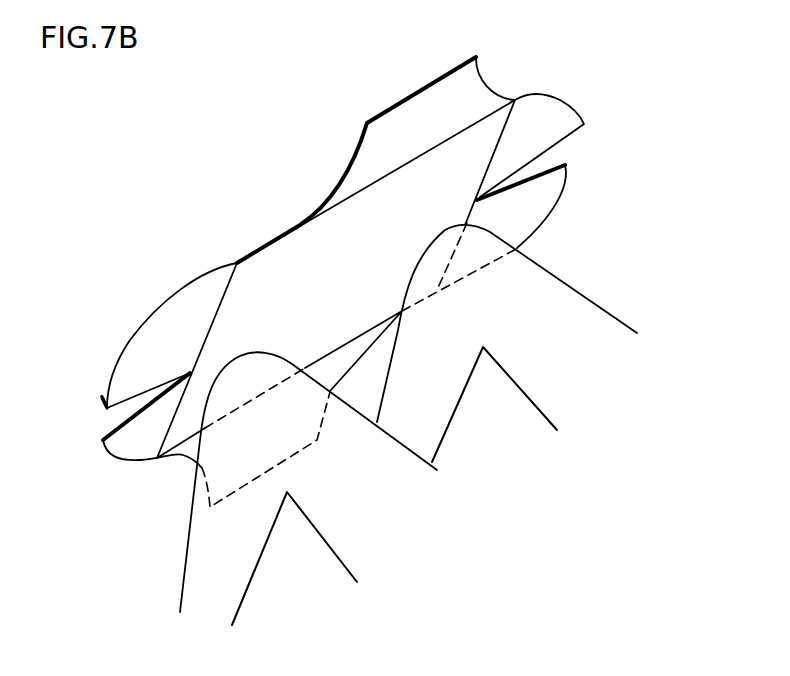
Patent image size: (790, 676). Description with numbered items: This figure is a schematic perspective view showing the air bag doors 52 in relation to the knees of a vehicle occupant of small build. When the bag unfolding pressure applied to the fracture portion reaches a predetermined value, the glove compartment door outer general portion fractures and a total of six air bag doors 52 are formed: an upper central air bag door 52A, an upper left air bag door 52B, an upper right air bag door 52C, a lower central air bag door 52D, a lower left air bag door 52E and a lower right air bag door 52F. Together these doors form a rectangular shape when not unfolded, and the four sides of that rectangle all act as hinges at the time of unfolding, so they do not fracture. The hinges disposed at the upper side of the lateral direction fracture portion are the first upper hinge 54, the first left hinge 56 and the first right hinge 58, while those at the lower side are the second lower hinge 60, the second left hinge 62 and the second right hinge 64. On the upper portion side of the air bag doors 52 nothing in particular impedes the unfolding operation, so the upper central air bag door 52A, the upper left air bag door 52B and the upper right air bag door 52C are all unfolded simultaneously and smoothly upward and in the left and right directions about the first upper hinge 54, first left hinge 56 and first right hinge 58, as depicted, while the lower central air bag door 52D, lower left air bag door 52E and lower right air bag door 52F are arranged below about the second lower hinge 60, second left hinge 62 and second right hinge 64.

The air bag doors 52 is at (593, 152).
The upper central air bag door 52A is at (393, 120).
The upper left air bag door 52B is at (158, 327).
The upper right air bag door 52C is at (560, 110).
The lower central air bag door 52D is at (248, 458).
The lower left air bag door 52E is at (143, 452).
The lower right air bag door 52F is at (535, 222).
The first upper hinge 54 is at (333, 212).
The first left hinge 56 is at (213, 327).
The first right hinge 58 is at (475, 193).
The second lower hinge 60 is at (335, 350).
The second left hinge 62 is at (177, 413).
The second right hinge 64 is at (473, 208).